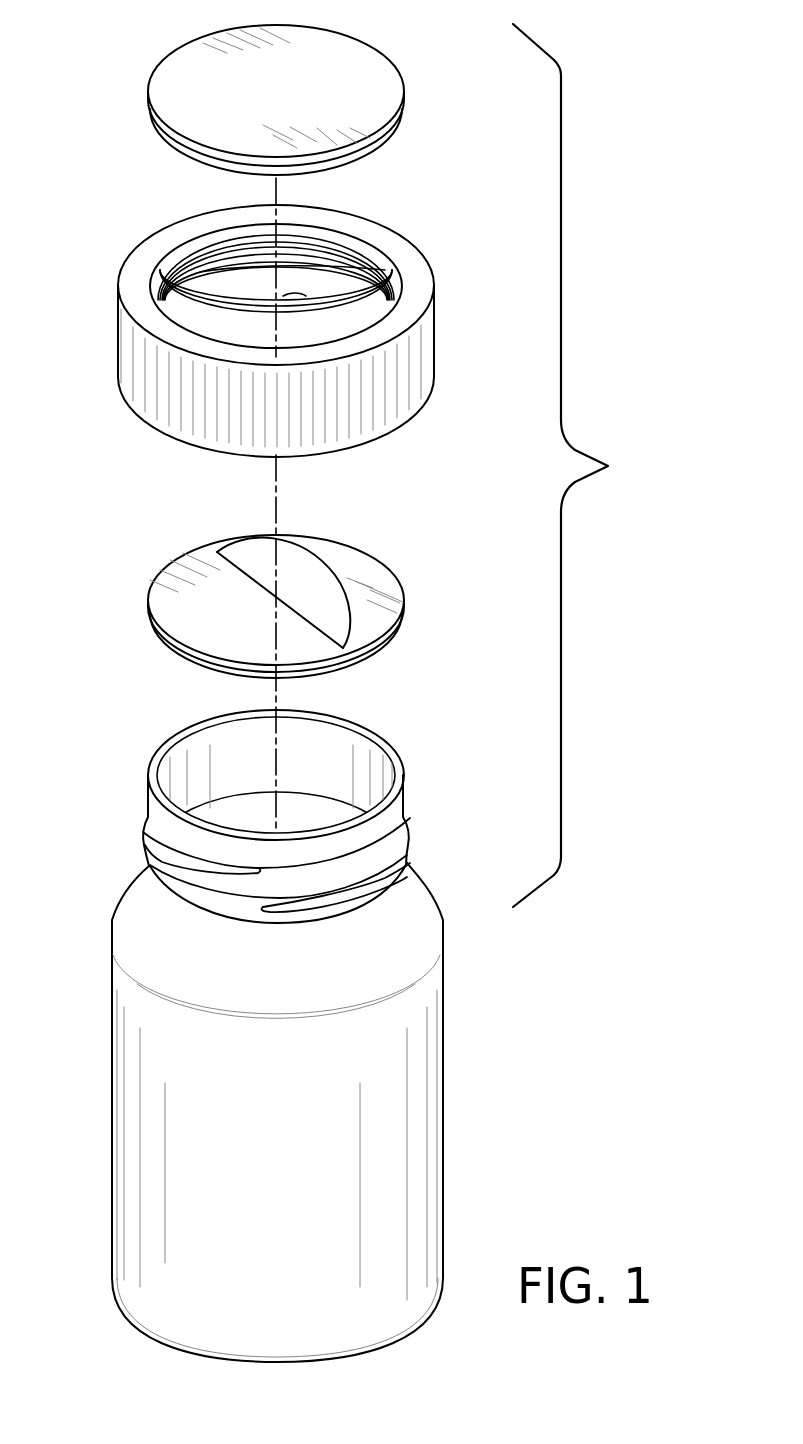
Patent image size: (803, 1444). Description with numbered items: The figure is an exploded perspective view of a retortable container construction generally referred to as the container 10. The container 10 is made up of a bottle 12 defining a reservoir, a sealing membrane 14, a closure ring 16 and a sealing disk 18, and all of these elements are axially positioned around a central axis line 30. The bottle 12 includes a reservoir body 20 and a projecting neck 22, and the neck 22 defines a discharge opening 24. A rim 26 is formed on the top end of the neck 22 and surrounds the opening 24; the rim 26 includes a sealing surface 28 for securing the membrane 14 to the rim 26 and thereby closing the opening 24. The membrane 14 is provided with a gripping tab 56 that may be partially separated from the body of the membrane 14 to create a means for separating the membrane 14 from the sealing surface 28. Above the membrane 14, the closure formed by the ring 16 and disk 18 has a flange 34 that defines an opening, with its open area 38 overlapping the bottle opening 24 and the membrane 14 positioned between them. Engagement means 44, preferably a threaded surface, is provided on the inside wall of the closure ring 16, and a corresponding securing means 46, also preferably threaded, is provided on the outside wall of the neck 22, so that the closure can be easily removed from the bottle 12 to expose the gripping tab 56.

The container 10 is at (577, 465).
The bottle 12 is at (315, 1020).
The sealing membrane 14 is at (298, 587).
The closure ring 16 is at (267, 319).
The sealing disk 18 is at (330, 55).
The reservoir body 20 is at (390, 1200).
The neck 22 is at (388, 818).
The discharge opening 24 is at (305, 758).
The rim 26 is at (402, 770).
The sealing surface 28 is at (170, 743).
The central axis line 30 is at (278, 500).
The flange 34 is at (377, 275).
The open area 38 is at (210, 318).
The engagement means 44 is at (212, 265).
The securing means 46 is at (400, 850).
The gripping tab 56 is at (250, 552).